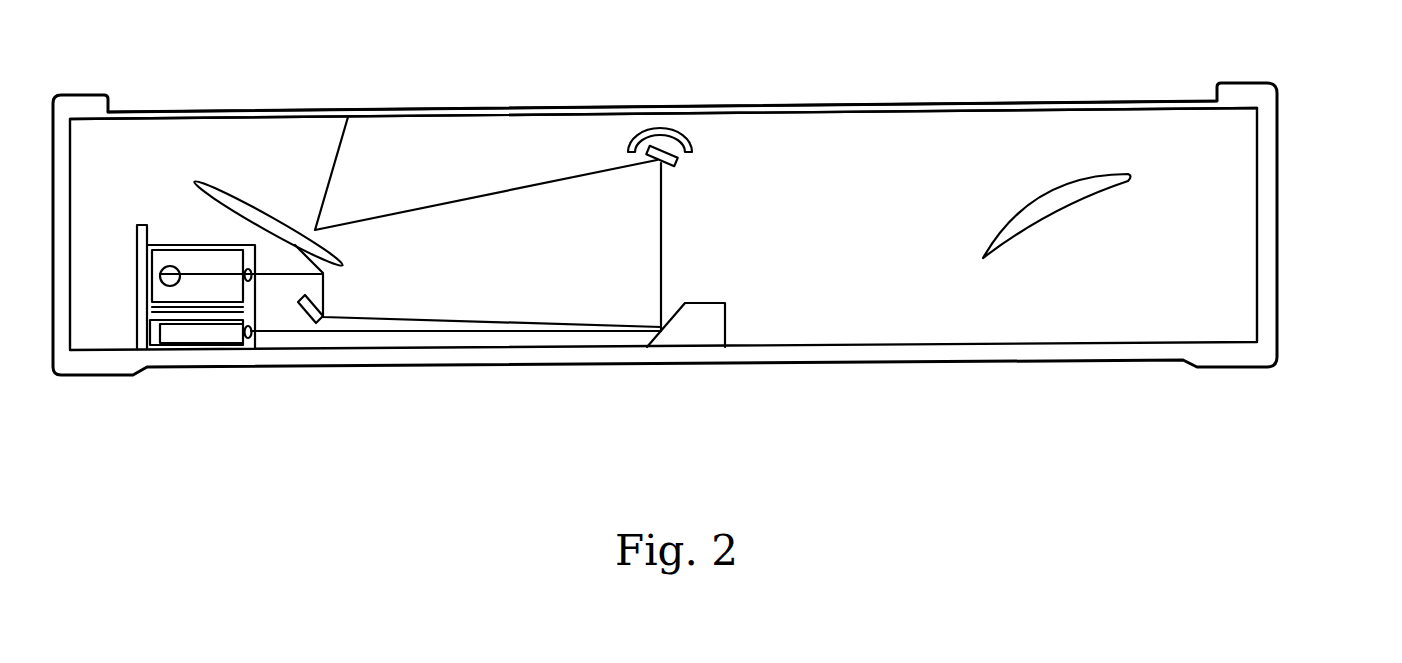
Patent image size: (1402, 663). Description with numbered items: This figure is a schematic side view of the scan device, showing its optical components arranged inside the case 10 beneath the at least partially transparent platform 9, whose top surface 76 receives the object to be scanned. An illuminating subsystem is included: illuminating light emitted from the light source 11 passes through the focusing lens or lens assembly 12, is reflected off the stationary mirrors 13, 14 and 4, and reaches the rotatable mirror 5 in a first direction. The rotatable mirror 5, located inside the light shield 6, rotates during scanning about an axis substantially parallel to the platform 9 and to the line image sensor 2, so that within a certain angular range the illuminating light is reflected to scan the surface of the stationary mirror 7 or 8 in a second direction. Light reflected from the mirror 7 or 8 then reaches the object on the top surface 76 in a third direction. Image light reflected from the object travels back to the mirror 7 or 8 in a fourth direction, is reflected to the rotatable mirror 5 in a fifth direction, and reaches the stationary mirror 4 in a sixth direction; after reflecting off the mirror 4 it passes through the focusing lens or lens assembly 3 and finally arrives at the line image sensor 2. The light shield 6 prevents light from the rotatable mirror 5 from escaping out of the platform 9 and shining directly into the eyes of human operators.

The line image sensor 2 is at (153, 338).
The focusing lens or lens assembly 3 is at (248, 338).
The stationary mirror 4 is at (686, 311).
The rotatable mirror 5 is at (670, 238).
The light shield 6 is at (690, 139).
The stationary mirror 7 is at (424, 194).
The stationary mirror 8 is at (1057, 215).
The at least partially transparent platform 9 is at (1023, 108).
The case 10 is at (1278, 327).
The light source 11 is at (162, 270).
The focusing lens or lens assembly 12 is at (245, 274).
The stationary mirror 13 is at (410, 286).
The stationary mirror 14 is at (331, 306).
The top surface 76 is at (913, 104).